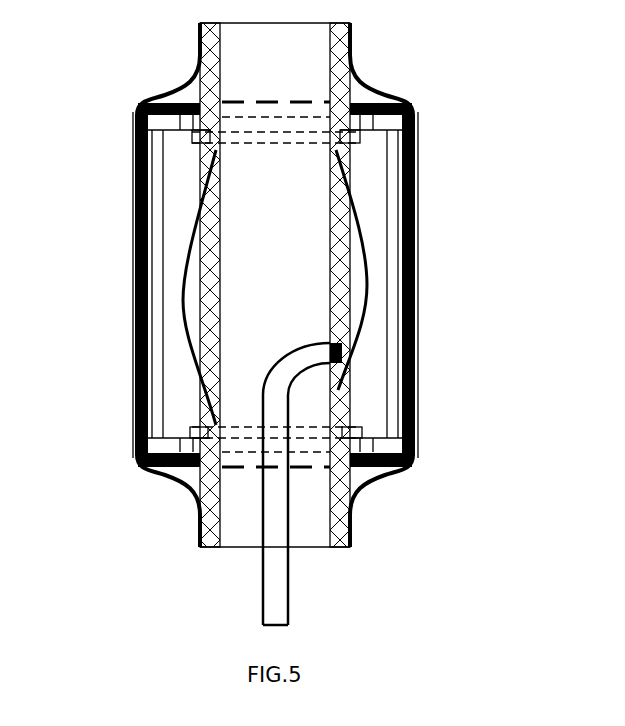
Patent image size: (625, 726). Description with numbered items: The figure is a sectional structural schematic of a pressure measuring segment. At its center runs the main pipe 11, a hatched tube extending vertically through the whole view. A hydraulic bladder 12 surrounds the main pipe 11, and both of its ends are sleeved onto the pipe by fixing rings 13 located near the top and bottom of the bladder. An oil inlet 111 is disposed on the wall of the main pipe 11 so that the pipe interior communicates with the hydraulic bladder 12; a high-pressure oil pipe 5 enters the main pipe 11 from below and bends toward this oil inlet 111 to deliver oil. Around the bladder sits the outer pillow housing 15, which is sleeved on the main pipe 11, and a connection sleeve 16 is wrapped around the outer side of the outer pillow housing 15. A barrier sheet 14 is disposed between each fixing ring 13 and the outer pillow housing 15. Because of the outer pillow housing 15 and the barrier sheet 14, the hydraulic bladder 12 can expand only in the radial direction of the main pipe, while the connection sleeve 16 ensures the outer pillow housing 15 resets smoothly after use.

The connection sleeve 16 is at (153, 90).
The outer pillow housing 15 is at (135, 297).
The barrier sheet 14 is at (408, 455).
The fixing ring 13 is at (188, 432).
The hydraulic bladder 12 is at (190, 257).
The main pipe 11 is at (340, 249).
The oil inlet 111 is at (343, 353).
The high-pressure oil pipe 5 is at (268, 609).